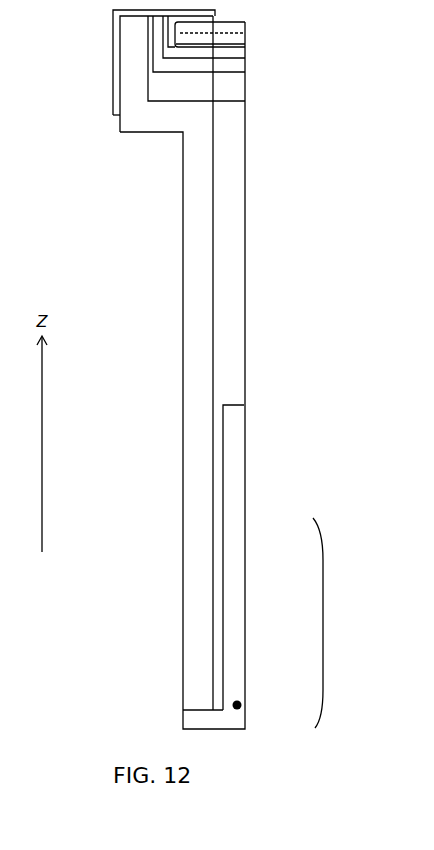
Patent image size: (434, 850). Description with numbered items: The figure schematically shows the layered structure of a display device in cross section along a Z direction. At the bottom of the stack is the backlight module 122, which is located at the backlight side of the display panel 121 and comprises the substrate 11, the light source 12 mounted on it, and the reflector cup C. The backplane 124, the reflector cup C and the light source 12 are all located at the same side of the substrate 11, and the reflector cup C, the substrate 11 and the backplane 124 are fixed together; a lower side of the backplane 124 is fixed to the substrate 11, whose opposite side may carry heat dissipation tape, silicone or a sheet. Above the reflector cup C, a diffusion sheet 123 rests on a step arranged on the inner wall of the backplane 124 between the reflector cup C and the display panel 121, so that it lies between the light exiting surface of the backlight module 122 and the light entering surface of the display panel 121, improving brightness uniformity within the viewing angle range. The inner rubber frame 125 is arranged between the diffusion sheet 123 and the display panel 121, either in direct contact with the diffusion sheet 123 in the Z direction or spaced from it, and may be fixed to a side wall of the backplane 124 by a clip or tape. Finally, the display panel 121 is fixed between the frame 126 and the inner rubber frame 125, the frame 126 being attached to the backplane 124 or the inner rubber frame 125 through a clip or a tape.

The display panel 121 is at (243, 29).
The inner rubber frame 125 is at (217, 58).
The diffusion sheet 123 is at (242, 87).
The frame 126 is at (117, 115).
The backplane 124 is at (198, 364).
The reflector cup C is at (237, 528).
The light source 12 is at (237, 705).
The substrate 11 is at (227, 721).
The backlight module 122 is at (323, 623).